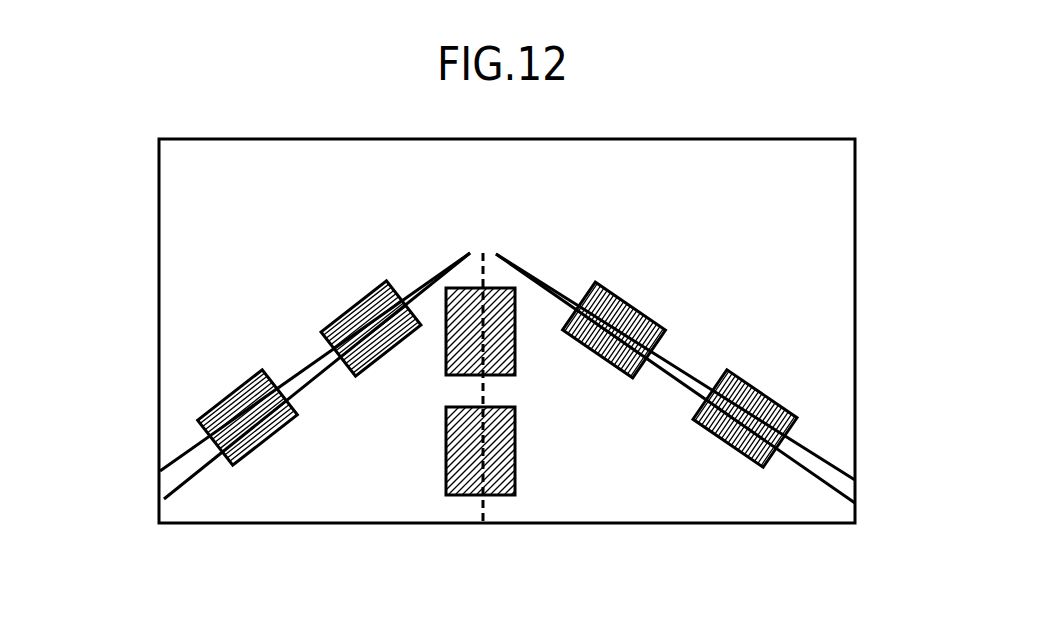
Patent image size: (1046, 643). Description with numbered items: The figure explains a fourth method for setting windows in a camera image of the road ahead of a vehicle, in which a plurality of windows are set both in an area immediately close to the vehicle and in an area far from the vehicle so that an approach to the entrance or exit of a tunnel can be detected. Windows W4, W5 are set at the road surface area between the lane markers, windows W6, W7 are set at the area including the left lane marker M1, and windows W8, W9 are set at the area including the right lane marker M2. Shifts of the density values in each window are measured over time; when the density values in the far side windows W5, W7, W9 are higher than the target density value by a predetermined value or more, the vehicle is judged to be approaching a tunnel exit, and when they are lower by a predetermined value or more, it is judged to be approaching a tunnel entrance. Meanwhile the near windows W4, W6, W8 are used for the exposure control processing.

The left lane marker M1 is at (424, 284).
The right lane marker M2 is at (550, 282).
The window W4 is at (515, 455).
The window W5 is at (515, 355).
The window W6 is at (227, 398).
The window W7 is at (347, 312).
The window W8 is at (767, 395).
The window W9 is at (633, 303).